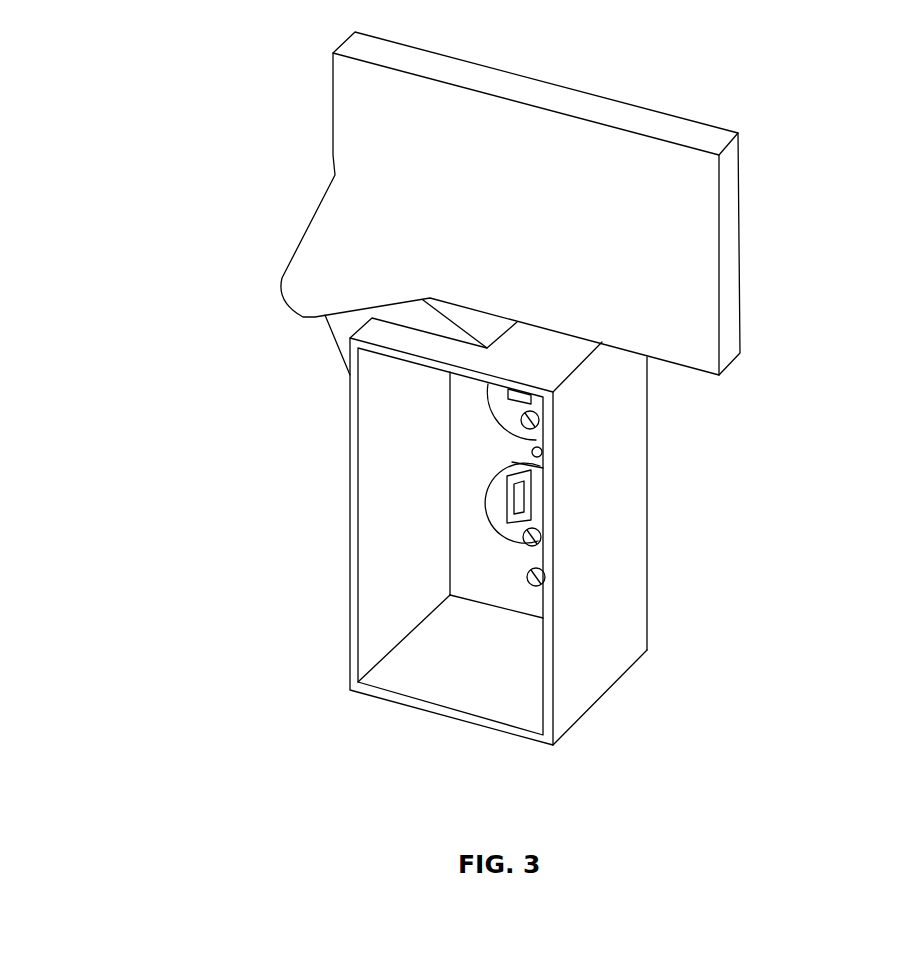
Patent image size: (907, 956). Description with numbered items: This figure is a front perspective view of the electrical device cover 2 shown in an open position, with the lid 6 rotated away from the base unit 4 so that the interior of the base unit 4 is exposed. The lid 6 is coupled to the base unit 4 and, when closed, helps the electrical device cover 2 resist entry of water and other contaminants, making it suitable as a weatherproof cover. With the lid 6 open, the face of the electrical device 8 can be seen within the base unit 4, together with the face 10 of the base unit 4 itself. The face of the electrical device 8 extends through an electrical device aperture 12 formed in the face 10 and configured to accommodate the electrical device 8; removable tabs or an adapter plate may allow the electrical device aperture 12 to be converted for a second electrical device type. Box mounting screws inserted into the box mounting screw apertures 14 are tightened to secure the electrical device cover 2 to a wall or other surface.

The electrical device cover 2 is at (232, 263).
The base unit 4 is at (605, 635).
The lid 6 is at (692, 195).
The electrical device 8 is at (532, 496).
The face 10 is at (490, 559).
The electrical device aperture 12 is at (517, 547).
The box mounting screw apertures 14 is at (538, 575).